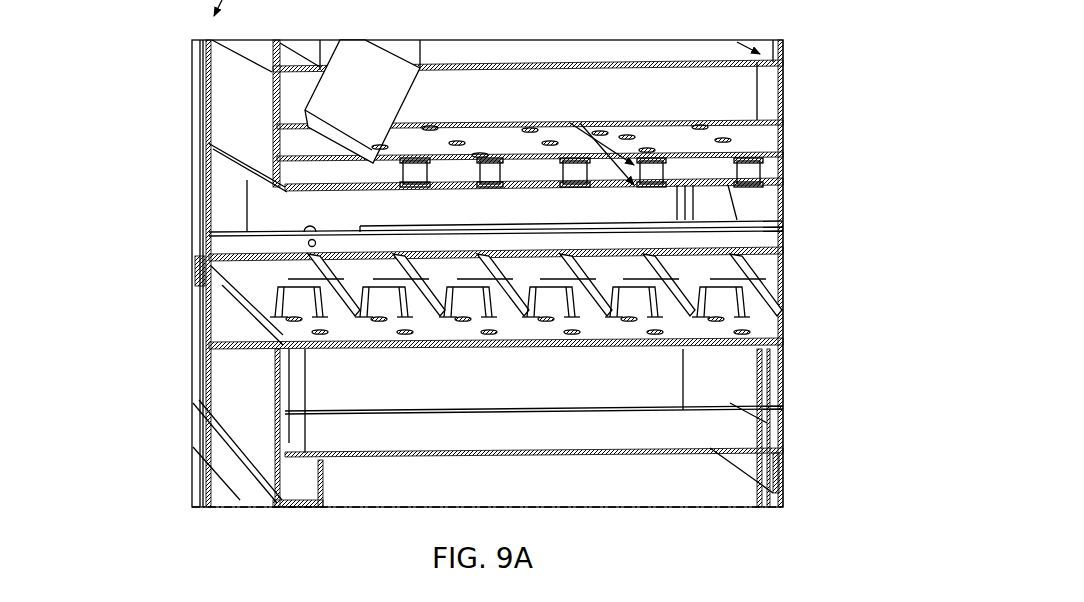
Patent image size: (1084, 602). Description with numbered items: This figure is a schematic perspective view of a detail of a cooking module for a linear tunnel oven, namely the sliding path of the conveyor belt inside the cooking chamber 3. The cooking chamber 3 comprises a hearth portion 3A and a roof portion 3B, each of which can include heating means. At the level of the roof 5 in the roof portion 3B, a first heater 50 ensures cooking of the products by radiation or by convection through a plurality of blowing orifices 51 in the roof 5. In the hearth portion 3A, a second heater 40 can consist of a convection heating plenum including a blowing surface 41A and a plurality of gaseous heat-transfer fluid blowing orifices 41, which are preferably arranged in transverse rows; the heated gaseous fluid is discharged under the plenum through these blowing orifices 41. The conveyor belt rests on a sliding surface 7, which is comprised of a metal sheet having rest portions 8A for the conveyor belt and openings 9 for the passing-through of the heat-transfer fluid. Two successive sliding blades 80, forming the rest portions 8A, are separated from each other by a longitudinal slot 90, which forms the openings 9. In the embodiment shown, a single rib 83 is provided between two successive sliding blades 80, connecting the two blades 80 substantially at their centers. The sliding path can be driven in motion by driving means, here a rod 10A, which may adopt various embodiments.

The cooking chamber 3 is at (266, 203).
The hearth portion 3A is at (227, 375).
The roof portion 3B is at (250, 110).
The roof 5 is at (675, 128).
The sliding surface 7 is at (700, 255).
The rest portions 8A is at (283, 287).
The sliding blades 80 is at (712, 273).
The rib 83 is at (316, 285).
The openings 9 is at (211, 334).
The longitudinal slot 90 is at (784, 380).
The rod 10A is at (274, 442).
The second heater 40 is at (592, 390).
The blowing orifices 41 is at (703, 328).
The blowing surface 41A is at (730, 341).
The first heater 50 is at (743, 90).
The blowing orifices 51 is at (770, 142).